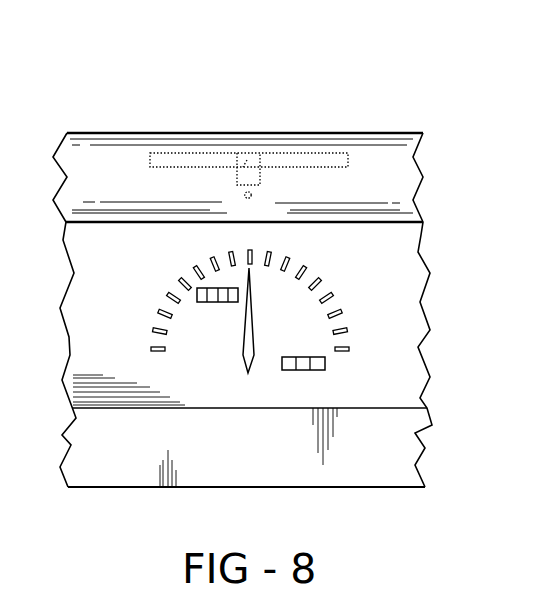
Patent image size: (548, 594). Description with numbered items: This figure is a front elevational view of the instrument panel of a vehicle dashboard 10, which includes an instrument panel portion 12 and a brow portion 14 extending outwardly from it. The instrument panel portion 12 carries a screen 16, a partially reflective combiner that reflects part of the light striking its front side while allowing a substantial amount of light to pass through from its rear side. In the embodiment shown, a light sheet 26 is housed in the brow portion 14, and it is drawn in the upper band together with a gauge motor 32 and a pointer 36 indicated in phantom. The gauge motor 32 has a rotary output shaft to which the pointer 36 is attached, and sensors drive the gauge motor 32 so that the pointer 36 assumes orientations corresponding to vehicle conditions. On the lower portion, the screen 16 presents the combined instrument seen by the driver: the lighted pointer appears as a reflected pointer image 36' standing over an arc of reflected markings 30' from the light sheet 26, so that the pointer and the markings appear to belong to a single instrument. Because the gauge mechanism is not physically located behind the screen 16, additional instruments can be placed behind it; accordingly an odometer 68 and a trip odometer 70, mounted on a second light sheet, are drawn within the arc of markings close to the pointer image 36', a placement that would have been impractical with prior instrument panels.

The vehicle dashboard 10 is at (102, 108).
The instrument panel portion 12 is at (103, 336).
The brow portion 14 is at (358, 130).
The screen 16 is at (382, 261).
The light sheet 26 is at (201, 160).
The reflected markings 30' is at (368, 313).
The gauge motor 32 is at (253, 152).
The pointer 36 is at (171, 183).
The reflection of the pointer 36' is at (219, 330).
The odometer 68 is at (227, 302).
The trip odometer 70 is at (303, 370).